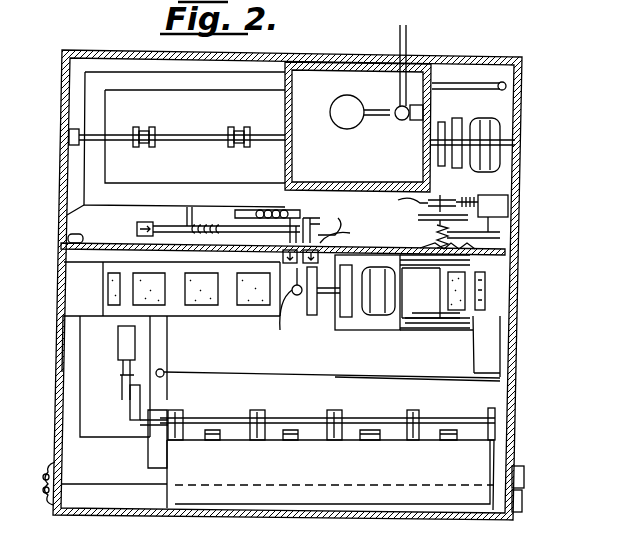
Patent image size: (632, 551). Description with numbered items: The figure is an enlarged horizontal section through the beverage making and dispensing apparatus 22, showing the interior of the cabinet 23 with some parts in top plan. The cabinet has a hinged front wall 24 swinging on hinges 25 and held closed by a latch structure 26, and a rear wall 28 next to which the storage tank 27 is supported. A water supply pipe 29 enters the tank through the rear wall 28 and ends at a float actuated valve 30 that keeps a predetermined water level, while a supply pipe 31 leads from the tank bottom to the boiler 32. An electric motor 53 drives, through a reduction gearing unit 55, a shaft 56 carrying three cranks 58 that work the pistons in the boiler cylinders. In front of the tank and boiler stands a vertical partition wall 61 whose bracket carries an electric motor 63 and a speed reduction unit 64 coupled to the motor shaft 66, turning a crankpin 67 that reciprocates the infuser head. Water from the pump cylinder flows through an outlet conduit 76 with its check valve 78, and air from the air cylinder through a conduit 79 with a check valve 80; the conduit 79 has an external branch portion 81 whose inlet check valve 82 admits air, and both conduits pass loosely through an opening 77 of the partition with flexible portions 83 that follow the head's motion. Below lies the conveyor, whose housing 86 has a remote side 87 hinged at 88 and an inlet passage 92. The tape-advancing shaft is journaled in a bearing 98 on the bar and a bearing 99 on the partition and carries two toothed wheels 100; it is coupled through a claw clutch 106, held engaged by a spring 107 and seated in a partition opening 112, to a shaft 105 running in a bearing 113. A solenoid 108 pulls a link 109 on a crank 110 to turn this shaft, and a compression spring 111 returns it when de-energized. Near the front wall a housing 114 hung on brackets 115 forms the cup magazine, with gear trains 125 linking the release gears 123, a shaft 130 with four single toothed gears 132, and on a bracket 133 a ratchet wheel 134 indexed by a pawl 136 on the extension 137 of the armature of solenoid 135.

The beverage making and dispensing apparatus 22 is at (512, 228).
The cabinet 23 is at (515, 364).
The hinged front wall 24 is at (170, 514).
The hinges 25 is at (46, 486).
The latch structure 26 is at (525, 477).
The storage tank 27 is at (340, 68).
The rear wall 28 is at (470, 61).
The water supply pipe 29 is at (407, 50).
The float actuated valve 30 is at (408, 110).
The supply pipe 31 is at (505, 82).
The boiler 32 is at (67, 215).
The electric motor 53 is at (498, 143).
The reduction gearing unit 55 is at (462, 130).
The shaft 56 is at (182, 137).
The cranks 58 is at (145, 143).
The vertical partition wall 61 is at (68, 240).
The electric motor 63 is at (378, 312).
The speed reduction unit 64 is at (318, 312).
The motor shaft 66 is at (347, 330).
The crankpin 67 is at (280, 316).
The outlet conduit 76 is at (262, 210).
The opening 77 is at (350, 233).
The check valve 78 is at (324, 236).
The conduit 79 is at (204, 224).
The check valve 80 is at (310, 218).
The branch portion 81 is at (170, 226).
The check valve 82 is at (145, 222).
The flexible portions 83 is at (290, 218).
The housing 86 is at (267, 362).
The remote sides 87 is at (330, 362).
The hinge mounting 88 is at (164, 371).
The inlet passage 92 is at (512, 380).
The bearing 98 is at (442, 331).
The bearing 99 is at (470, 258).
The toothed wheels 100 is at (420, 326).
The shaft 105 is at (437, 236).
The claw clutch 106 is at (440, 270).
The spring 107 is at (418, 217).
The solenoid 108 is at (510, 199).
The link 109 is at (448, 200).
The crank 110 is at (398, 200).
The compression spring 111 is at (470, 196).
The opening 112 is at (480, 248).
The bearing 113 is at (510, 203).
The housing 114 is at (445, 497).
The brackets 115 is at (193, 514).
The gear 123 is at (450, 440).
The gear trains 125 is at (333, 440).
The shaft 130 is at (396, 425).
The single toothed gears 132 is at (338, 412).
The bracket 133 is at (85, 394).
The ratchet wheel 134 is at (148, 440).
The solenoid 135 is at (118, 344).
The pawl 136 is at (130, 421).
The extension 137 is at (128, 382).